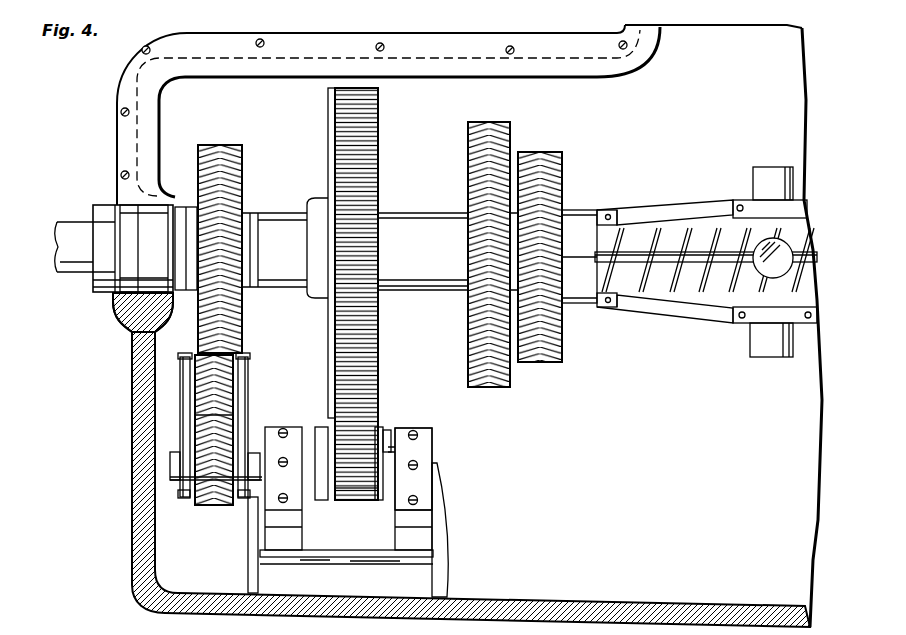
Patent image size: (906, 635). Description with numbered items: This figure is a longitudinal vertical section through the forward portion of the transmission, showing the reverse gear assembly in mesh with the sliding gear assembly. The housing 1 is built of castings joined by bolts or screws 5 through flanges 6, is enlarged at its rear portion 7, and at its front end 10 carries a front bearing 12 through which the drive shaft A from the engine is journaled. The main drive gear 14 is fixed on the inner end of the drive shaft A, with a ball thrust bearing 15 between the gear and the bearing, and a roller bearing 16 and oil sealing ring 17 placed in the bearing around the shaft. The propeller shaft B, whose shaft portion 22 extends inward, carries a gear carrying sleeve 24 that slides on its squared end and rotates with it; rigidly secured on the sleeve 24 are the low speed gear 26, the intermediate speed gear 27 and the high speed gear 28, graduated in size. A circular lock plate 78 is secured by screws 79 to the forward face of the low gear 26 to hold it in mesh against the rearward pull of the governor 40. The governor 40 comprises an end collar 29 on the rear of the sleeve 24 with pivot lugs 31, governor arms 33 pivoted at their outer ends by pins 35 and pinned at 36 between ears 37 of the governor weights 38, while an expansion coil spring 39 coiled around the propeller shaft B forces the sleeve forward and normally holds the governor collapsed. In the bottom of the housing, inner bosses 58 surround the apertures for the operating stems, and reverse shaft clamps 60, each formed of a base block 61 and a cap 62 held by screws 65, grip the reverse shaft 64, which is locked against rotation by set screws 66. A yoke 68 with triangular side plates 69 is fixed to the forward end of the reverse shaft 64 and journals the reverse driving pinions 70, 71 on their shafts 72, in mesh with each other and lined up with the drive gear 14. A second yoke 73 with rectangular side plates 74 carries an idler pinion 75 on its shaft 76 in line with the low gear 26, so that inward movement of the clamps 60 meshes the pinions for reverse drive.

The housing 1 is at (115, 551).
The bolts or screws 5 is at (510, 50).
The flanges 6 is at (123, 72).
The diametrically enlarged rear portion 7 is at (760, 47).
The front end of housing 10 is at (127, 383).
The front bearing 12 is at (118, 298).
The main or countershaft drive gear 14 is at (228, 145).
The ball thrust bearing 15 is at (188, 205).
The roller bearing 16 is at (144, 248).
The oil sealing ring 17 is at (117, 205).
The shaft 22 is at (262, 210).
The gear carrying sleeve 24 is at (437, 212).
The low speed gear 26 is at (378, 142).
The intermediate speed gear 27 is at (512, 122).
The high speed gear 28 is at (565, 152).
The front governor end collar 29 is at (576, 303).
The pivot lugs 31 is at (600, 208).
The governor arms 33 is at (662, 205).
The pins 35 is at (613, 207).
The pins 36 is at (740, 193).
The ears 37 is at (777, 168).
The governor weights 38 is at (780, 168).
The expansion coil spring 39 is at (705, 208).
The governor 40 is at (718, 168).
The inner bosses 58 is at (438, 540).
The reverse shaft clamps 60 is at (255, 513).
The base blocks 61 is at (397, 540).
The caps 62 is at (270, 427).
The reverse shaft 64 is at (167, 480).
The screws 65 is at (278, 425).
The set screws 66 is at (446, 469).
The yoke 68 is at (173, 422).
The side plates 69 is at (187, 358).
The counter-shaft reverse driving pinion 70 is at (187, 400).
The counter-shaft reverse driving pinion 71 is at (200, 507).
The pinion shafts 72 is at (253, 366).
The yoke 73 is at (384, 416).
The side plates 74 is at (322, 427).
The idler pinion 75 is at (350, 492).
The idler pinion shaft 76 is at (392, 452).
The circular lock plate 78 is at (328, 101).
The screws 79 is at (322, 130).
The drive shaft A is at (70, 222).
The propeller shaft B is at (702, 258).